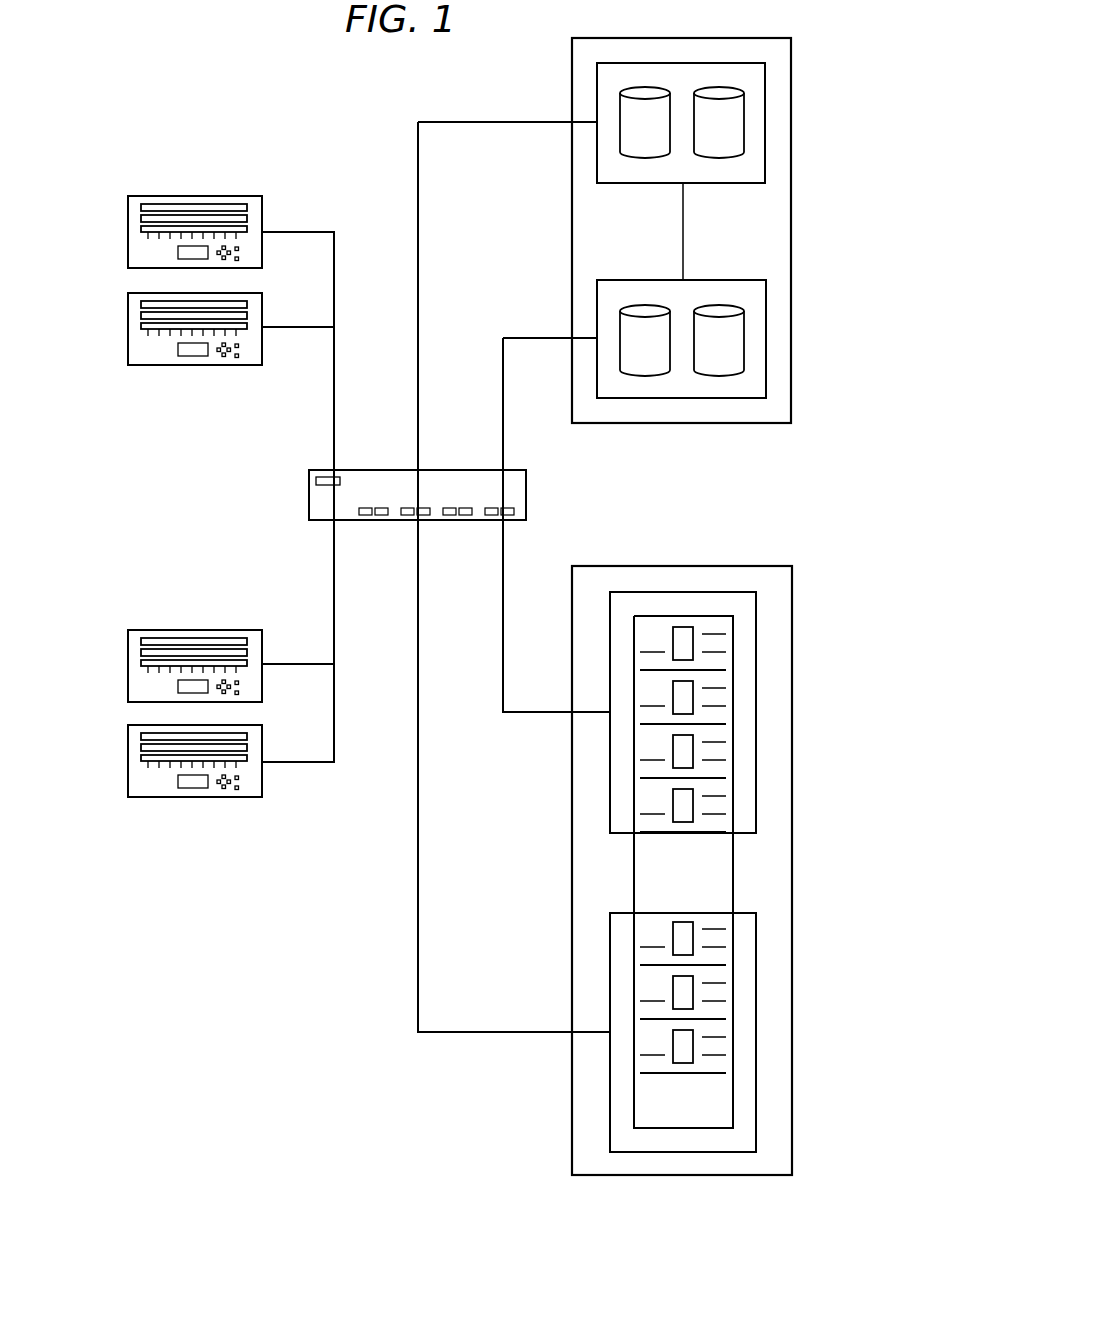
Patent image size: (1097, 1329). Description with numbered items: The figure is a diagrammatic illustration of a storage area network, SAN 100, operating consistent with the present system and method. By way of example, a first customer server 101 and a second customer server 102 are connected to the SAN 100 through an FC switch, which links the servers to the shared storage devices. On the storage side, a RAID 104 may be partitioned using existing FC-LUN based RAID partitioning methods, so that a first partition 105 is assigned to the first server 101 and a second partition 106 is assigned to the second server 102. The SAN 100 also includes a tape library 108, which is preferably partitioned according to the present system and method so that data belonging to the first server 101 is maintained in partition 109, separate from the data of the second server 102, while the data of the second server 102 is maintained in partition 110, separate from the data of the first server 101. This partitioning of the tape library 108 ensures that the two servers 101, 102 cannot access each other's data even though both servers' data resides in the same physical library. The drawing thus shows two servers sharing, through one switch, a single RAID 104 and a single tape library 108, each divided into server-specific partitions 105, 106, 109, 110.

The SAN 100 is at (278, 90).
The first customer server 101 is at (122, 196).
The second customer server 102 is at (122, 630).
The RAID 104 is at (793, 203).
The first partition 105 is at (720, 185).
The second partition 106 is at (645, 279).
The tape library 108 is at (793, 946).
The partition 109 is at (624, 912).
The partition 110 is at (744, 835).